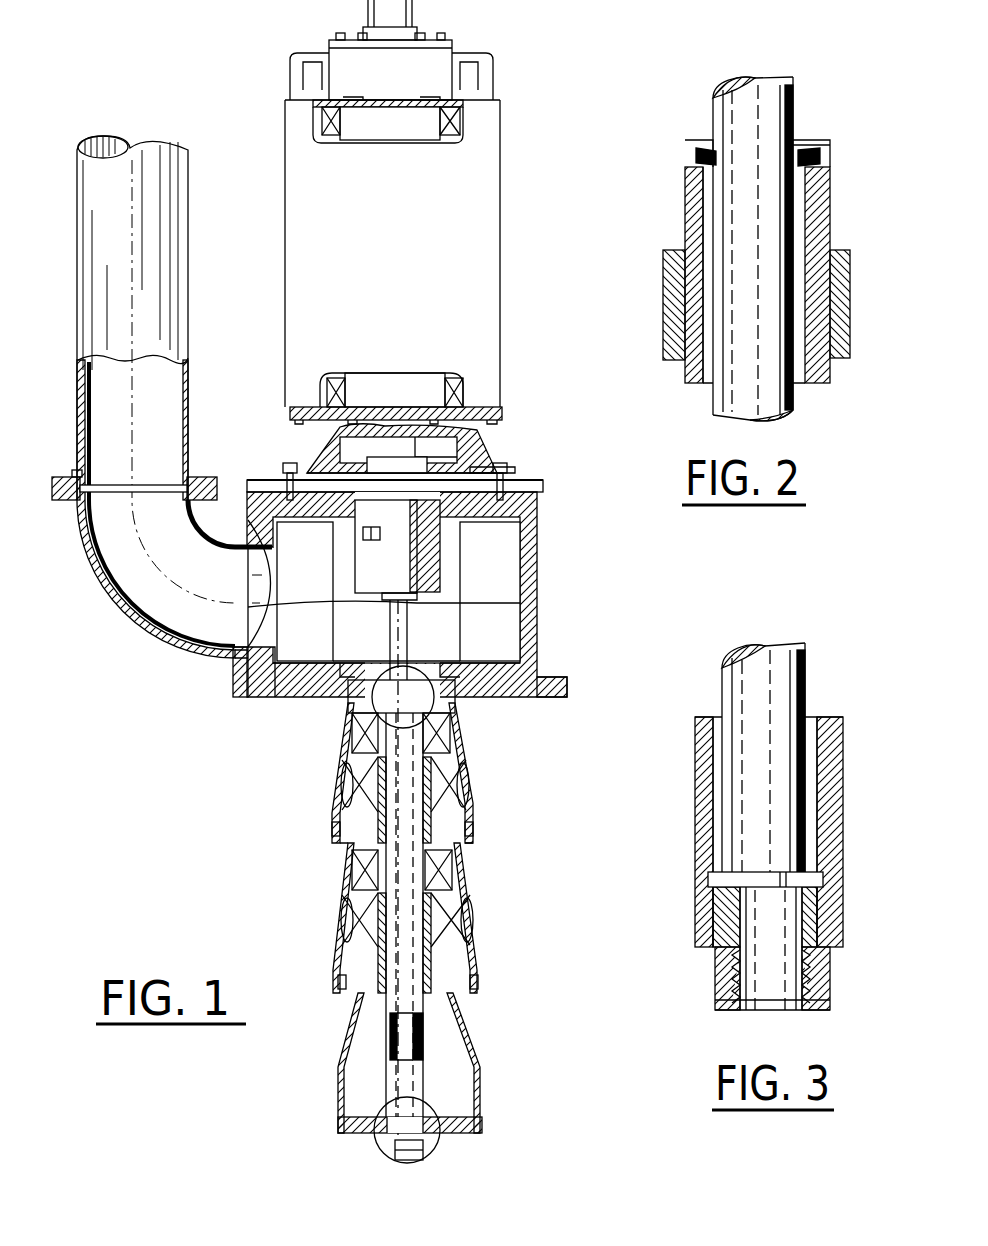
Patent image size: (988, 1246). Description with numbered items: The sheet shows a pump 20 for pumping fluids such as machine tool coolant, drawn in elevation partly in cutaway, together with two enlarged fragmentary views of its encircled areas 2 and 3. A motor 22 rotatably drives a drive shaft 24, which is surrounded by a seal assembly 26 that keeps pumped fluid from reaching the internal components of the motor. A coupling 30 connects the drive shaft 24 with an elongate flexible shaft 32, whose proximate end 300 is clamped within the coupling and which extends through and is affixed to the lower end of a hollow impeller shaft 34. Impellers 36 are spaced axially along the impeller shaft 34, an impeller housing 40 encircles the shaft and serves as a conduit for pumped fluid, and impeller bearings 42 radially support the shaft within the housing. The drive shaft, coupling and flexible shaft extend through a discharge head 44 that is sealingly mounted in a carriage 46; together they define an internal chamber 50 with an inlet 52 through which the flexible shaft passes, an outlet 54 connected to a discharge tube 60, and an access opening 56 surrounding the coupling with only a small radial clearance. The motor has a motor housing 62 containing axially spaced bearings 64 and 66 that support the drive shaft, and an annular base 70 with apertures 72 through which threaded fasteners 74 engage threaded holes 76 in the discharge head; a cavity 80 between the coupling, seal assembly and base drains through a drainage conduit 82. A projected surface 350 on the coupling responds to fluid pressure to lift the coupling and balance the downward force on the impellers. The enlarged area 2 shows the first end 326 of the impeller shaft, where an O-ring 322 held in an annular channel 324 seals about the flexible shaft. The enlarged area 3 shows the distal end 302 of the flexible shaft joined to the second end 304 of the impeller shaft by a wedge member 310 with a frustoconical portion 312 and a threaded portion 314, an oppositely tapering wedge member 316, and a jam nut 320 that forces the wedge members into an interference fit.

In FIG. 1, the pump 20 is at (598, 557).
In FIG. 1, the motor 22 is at (488, 159).
In FIG. 1, the drive shaft 24 is at (392, 443).
In FIG. 1, the seal assembly 26 is at (387, 463).
In FIG. 1, the coupling 30 is at (370, 525).
In FIG. 1, the flexible shaft 32 is at (405, 642).
In FIG. 2, the flexible shaft 32 is at (711, 98).
In FIG. 3, the flexible shaft 32 is at (796, 654).
In FIG. 1, the impeller shaft 34 is at (396, 990).
In FIG. 2, the impeller shaft 34 is at (688, 200).
In FIG. 3, the impeller shaft 34 is at (830, 728).
In FIG. 1, the impellers 36 is at (355, 784).
In FIG. 1, the impeller housing 40 is at (460, 871).
In FIG. 1, the impeller bearings 42 is at (350, 873).
In FIG. 2, the impeller bearings 42 is at (850, 300).
In FIG. 1, the discharge head 44 is at (540, 494).
In FIG. 1, the carriage 46 is at (541, 681).
In FIG. 1, the internal chamber 50 is at (521, 548).
In FIG. 1, the inlet 52 is at (357, 663).
In FIG. 1, the outlet 54 is at (250, 658).
In FIG. 1, the access opening 56 is at (330, 470).
In FIG. 1, the discharge tube 60 is at (93, 562).
In FIG. 1, the motor housing 62 is at (291, 154).
In FIG. 1, the bearing 64 is at (463, 125).
In FIG. 1, the bearing 66 is at (462, 408).
In FIG. 1, the annular base 70 is at (283, 471).
In FIG. 1, the apertures 72 is at (473, 467).
In FIG. 1, the threaded fasteners 74 is at (506, 463).
In FIG. 1, the threaded holes 76 is at (512, 481).
In FIG. 1, the cavity 80 is at (340, 452).
In FIG. 1, the drainage conduit 82 is at (433, 522).
In FIG. 1, the encircled area 2 is at (346, 716).
In FIG. 1, the encircled area 3 is at (400, 1165).
In FIG. 1, the proximate end 300 is at (300, 601).
In FIG. 1, the distal end 302 is at (385, 1113).
In FIG. 3, the distal end 302 is at (767, 1011).
In FIG. 1, the second end 304 is at (440, 1127).
In FIG. 3, the wedge member 310 is at (828, 870).
In FIG. 3, the frustoconical portion 312 is at (718, 894).
In FIG. 3, the threaded portion 314 is at (725, 1008).
In FIG. 3, the wedge member 316 is at (720, 936).
In FIG. 3, the jam nut 320 is at (830, 979).
In FIG. 2, the O-ring 322 is at (816, 156).
In FIG. 2, the annular channel 324 is at (712, 147).
In FIG. 2, the first end 326 is at (806, 145).
In FIG. 1, the projected surface 350 is at (417, 602).